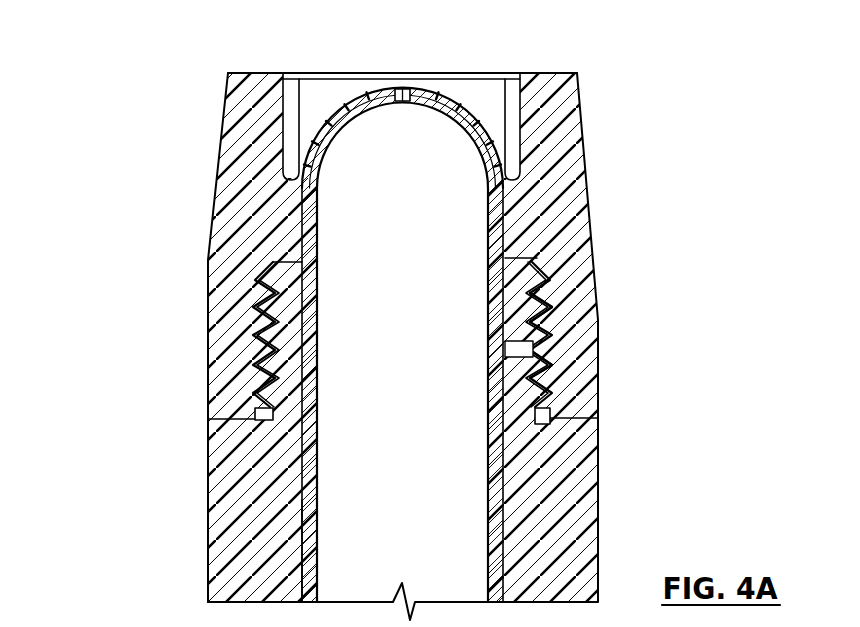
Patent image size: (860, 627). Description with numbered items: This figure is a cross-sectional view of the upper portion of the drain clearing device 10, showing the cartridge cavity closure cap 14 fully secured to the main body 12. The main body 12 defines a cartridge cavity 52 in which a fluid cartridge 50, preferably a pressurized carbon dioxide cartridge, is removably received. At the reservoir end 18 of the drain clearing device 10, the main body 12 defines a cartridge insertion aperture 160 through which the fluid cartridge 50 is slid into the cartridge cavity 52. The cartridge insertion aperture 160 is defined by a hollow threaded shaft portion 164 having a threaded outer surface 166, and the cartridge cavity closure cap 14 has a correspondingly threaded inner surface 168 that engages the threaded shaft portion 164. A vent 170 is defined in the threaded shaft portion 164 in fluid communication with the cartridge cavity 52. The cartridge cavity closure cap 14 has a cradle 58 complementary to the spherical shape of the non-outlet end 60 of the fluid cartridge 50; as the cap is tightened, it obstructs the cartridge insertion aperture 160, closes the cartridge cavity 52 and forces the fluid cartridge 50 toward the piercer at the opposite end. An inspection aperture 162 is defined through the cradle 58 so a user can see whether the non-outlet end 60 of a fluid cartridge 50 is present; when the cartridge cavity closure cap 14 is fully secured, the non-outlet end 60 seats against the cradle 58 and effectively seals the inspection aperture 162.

The drain clearing device 10 is at (117, 250).
The main body 12 is at (572, 446).
The cartridge cavity closure cap 14 is at (583, 132).
The reservoir end 18 is at (182, 142).
The fluid cartridge 50 is at (505, 527).
The cartridge cavity 52 is at (305, 533).
The cradle 58 is at (455, 110).
The non-outlet end 60 is at (452, 118).
The cartridge insertion aperture 160 is at (508, 291).
The inspection aperture 162 is at (402, 88).
The threaded shaft portion 164 is at (522, 377).
The threaded outer surface 166 is at (540, 325).
The threaded inner surface 168 is at (535, 307).
The vent 170 is at (510, 350).